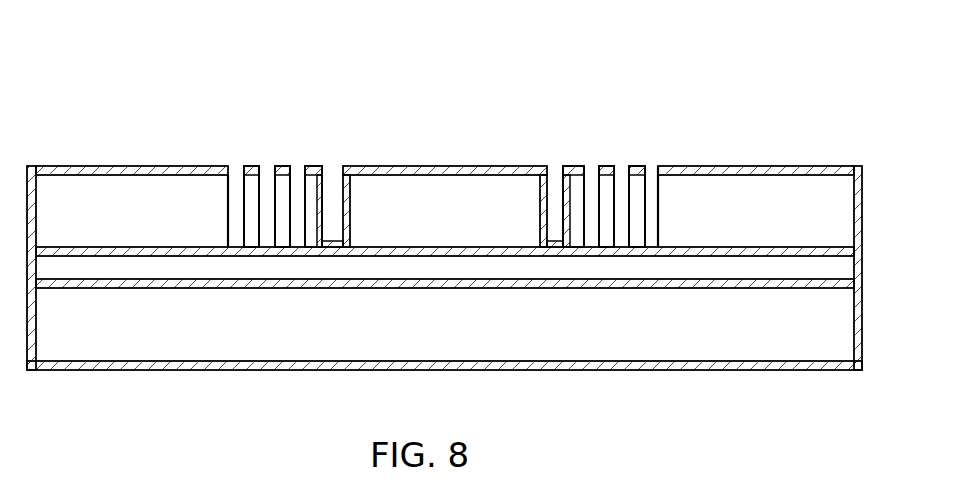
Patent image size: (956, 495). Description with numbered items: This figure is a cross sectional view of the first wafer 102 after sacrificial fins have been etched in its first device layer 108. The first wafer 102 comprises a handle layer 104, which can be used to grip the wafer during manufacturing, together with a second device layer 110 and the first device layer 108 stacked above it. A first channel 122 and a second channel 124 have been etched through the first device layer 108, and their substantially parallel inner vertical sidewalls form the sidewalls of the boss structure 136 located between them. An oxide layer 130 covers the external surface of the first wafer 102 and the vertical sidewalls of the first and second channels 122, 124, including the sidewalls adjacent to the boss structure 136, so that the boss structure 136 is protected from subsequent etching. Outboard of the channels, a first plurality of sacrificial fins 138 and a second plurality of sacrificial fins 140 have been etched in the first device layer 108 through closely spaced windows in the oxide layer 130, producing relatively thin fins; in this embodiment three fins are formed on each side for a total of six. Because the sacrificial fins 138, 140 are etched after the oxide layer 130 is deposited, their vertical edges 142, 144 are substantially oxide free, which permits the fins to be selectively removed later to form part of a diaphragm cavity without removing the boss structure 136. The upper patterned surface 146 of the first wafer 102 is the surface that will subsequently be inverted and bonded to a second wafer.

The first wafer 102 is at (176, 58).
The handle layer 104 is at (603, 347).
The first device layer 108 is at (735, 187).
The second device layer 110 is at (775, 275).
The first channel 122 is at (330, 185).
The second channel 124 is at (555, 182).
The oxide layer 130 is at (137, 165).
The boss structure 136 is at (462, 222).
The first plurality of sacrificial fins 138 is at (310, 185).
The second plurality of sacrificial fins 140 is at (637, 183).
The vertical edges of the first plurality of sacrificial fins 142 is at (235, 203).
The vertical edges of the second plurality of sacrificial fins 144 is at (647, 203).
The patterned surface 146 is at (60, 163).